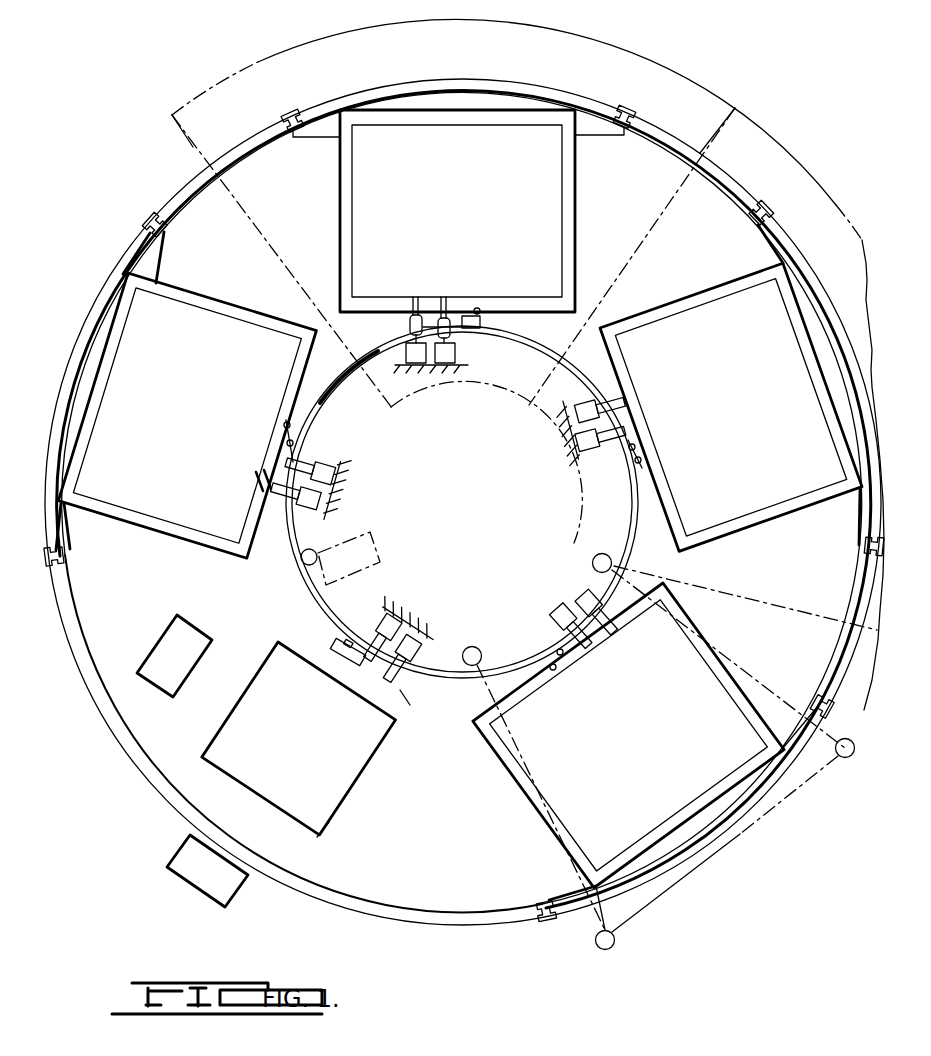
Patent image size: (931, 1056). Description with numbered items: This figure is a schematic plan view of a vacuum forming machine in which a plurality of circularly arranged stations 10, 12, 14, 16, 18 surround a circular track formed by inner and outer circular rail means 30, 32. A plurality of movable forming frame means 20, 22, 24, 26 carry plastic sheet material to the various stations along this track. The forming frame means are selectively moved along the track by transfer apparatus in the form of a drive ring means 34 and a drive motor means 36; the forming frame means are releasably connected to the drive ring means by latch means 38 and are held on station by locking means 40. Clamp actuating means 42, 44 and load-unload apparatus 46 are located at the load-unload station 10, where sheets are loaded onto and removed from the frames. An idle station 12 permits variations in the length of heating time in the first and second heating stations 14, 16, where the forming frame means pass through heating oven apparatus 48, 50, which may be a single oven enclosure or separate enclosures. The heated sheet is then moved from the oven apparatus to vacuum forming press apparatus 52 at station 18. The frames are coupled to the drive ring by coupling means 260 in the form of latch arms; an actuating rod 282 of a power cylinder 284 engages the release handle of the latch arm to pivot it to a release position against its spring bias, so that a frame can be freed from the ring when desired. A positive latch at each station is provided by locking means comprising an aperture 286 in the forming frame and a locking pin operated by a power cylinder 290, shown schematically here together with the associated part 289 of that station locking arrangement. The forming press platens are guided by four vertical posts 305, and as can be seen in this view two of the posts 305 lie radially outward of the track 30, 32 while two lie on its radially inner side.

The load-unload station 10 is at (320, 812).
The idle station 12 is at (177, 333).
The first heating station 14 is at (462, 127).
The second heating station 16 is at (745, 492).
The press station 18 is at (565, 806).
The movable forming frame means 20 is at (153, 517).
The movable forming frame means 22 is at (576, 184).
The movable forming frame means 24 is at (698, 310).
The movable forming frame means 26 is at (505, 752).
The inner circular rail means 30 is at (355, 380).
The outer circular rail means 32 is at (67, 597).
The drive ring means 34 is at (400, 690).
The drive motor means 36 is at (360, 548).
The latch means 38 is at (300, 465).
The locking means 40 is at (268, 500).
The clamp actuating means 42 is at (175, 856).
The clamp actuating means 44 is at (196, 635).
The load-unload apparatus 46 is at (352, 800).
The heating oven apparatus 48 is at (213, 88).
The heating oven apparatus 50 is at (788, 147).
The vacuum forming press apparatus 52 is at (640, 915).
The coupling means 260 is at (341, 664).
The actuating rod 282 is at (417, 623).
The power cylinder 284 is at (380, 618).
The aperture 286 is at (628, 385).
The rack at station 4 actuator 289 is at (618, 378).
The power cylinder 290 is at (592, 402).
The vertical posts 305 is at (594, 567).